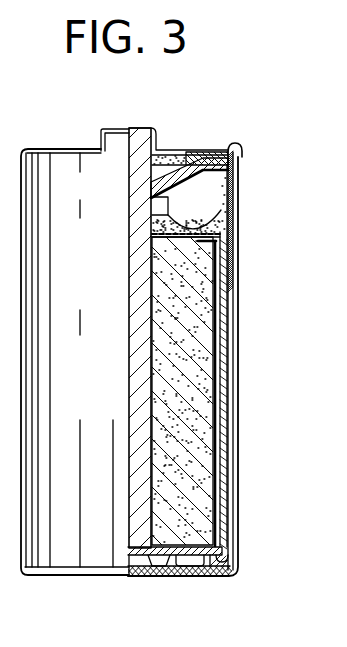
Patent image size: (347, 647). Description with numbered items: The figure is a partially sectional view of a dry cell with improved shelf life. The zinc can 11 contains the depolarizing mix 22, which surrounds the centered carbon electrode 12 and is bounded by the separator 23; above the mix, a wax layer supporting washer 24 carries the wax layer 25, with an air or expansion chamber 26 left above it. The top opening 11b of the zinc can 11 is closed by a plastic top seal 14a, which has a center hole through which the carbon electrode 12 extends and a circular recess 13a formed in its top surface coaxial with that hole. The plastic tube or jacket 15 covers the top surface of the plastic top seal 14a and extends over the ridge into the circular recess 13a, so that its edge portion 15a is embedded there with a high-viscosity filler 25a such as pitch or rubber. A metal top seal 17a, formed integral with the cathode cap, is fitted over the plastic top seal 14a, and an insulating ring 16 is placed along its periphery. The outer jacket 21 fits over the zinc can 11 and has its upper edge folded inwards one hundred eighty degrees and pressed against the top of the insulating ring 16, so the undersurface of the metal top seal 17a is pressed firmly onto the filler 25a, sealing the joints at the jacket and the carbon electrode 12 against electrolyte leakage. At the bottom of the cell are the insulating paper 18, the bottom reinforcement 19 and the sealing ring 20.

The zinc can 11 is at (228, 376).
The top opening 11b is at (232, 194).
The carbon electrode 12 is at (134, 282).
The circular recess 13a is at (148, 194).
The plastic top seal 14a is at (230, 174).
The plastic tube or jacket 15 is at (230, 413).
The edge portion 15a is at (182, 158).
The insulating ring 16 is at (241, 149).
The metal top seal 17a is at (157, 142).
The insulating paper 18 is at (157, 556).
The bottom reinforcement 19 is at (185, 577).
The sealing ring 20 is at (214, 564).
The outer jacket 21 is at (236, 449).
The depolarizing mix 22 is at (185, 333).
The separator 23 is at (216, 278).
The wax layer supporting washer 24 is at (216, 246).
The wax layer 25 is at (166, 238).
The filler 25a is at (169, 158).
The air or expansion chamber 26 is at (205, 211).